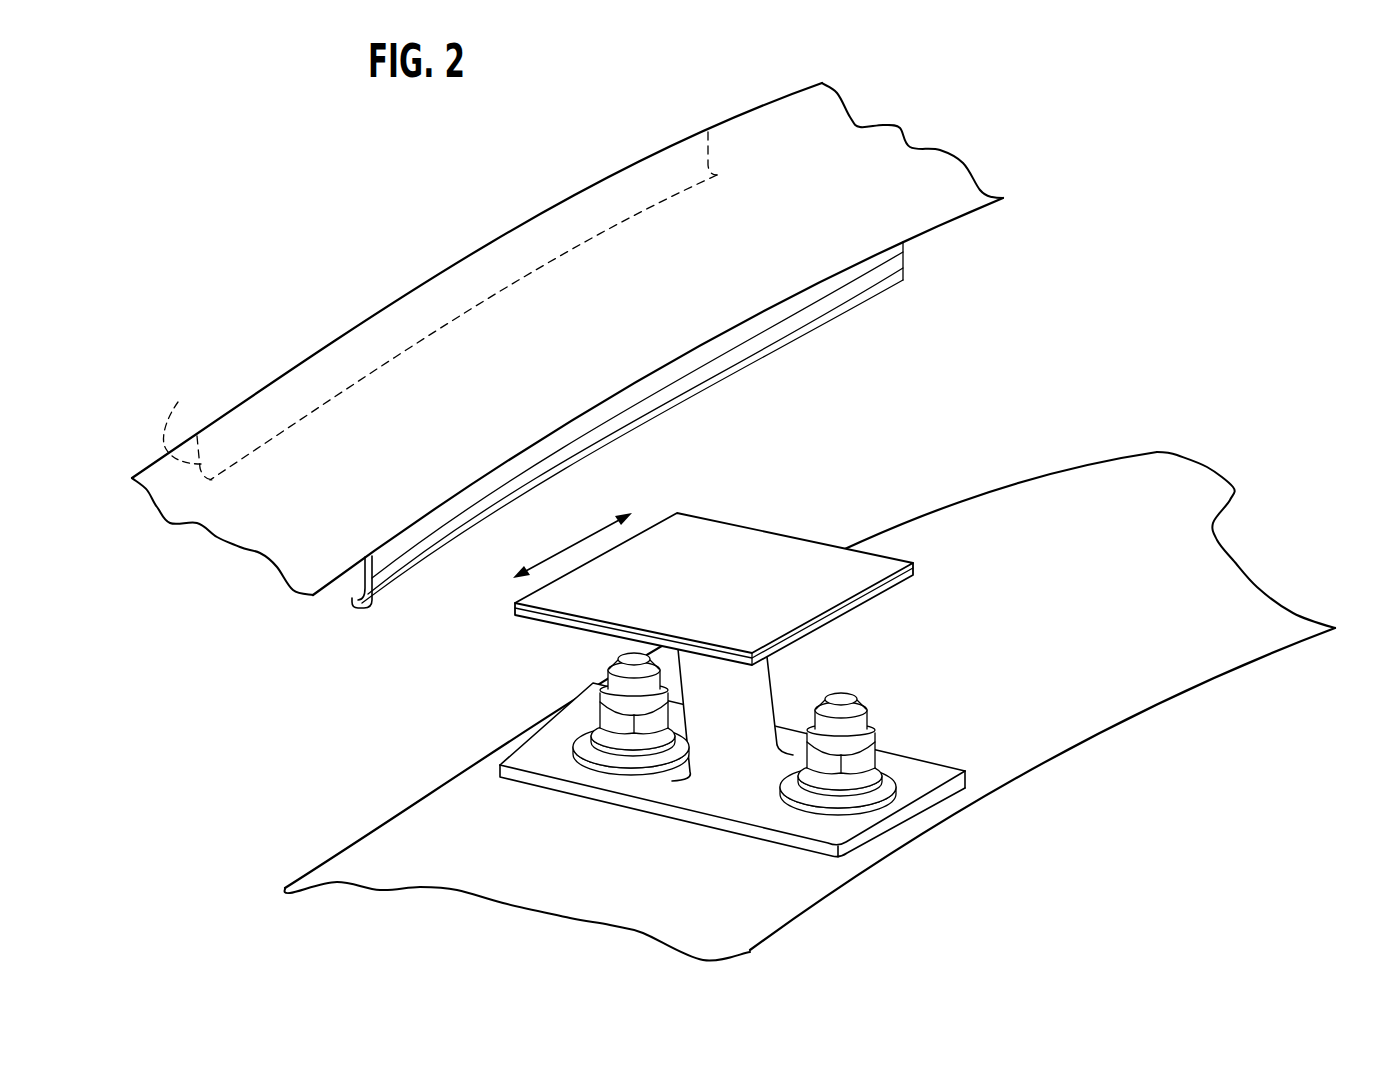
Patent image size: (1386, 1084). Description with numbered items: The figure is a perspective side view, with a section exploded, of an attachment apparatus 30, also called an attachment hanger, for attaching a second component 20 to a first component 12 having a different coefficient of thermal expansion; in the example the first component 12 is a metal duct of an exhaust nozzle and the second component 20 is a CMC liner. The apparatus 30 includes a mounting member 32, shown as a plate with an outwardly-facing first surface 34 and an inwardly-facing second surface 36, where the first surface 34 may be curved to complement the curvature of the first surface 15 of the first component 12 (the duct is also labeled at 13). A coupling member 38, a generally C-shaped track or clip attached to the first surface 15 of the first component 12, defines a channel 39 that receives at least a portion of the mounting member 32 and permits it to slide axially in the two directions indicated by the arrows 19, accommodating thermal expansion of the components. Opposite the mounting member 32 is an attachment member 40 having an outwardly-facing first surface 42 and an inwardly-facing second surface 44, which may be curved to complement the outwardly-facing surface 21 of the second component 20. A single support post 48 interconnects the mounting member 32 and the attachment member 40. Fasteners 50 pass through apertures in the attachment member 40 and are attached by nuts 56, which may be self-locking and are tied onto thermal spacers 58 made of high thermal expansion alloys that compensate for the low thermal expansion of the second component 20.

The first component 12 is at (567, 363).
The surface of first panel 13 is at (908, 207).
The first surface of the first component 15 is at (275, 513).
The arrows 19 is at (566, 547).
The second component 20 is at (810, 678).
The outwardly-facing surface of the second component 21 is at (1115, 517).
The attachment apparatus 30 is at (773, 644).
The mounting member 32 is at (736, 558).
The first surface of the mounting member 34 is at (884, 582).
The second surface of the mounting member 36 is at (880, 594).
The coupling member 38 is at (278, 408).
The channel 39 is at (267, 526).
The attachment member 40 is at (773, 770).
The first surface of the attachment member 42 is at (913, 766).
The second surface of the attachment member 44 is at (924, 803).
The support post 48 is at (762, 690).
The fastener 50 is at (858, 720).
The nut 56 is at (864, 752).
The thermal spacer 58 is at (892, 775).